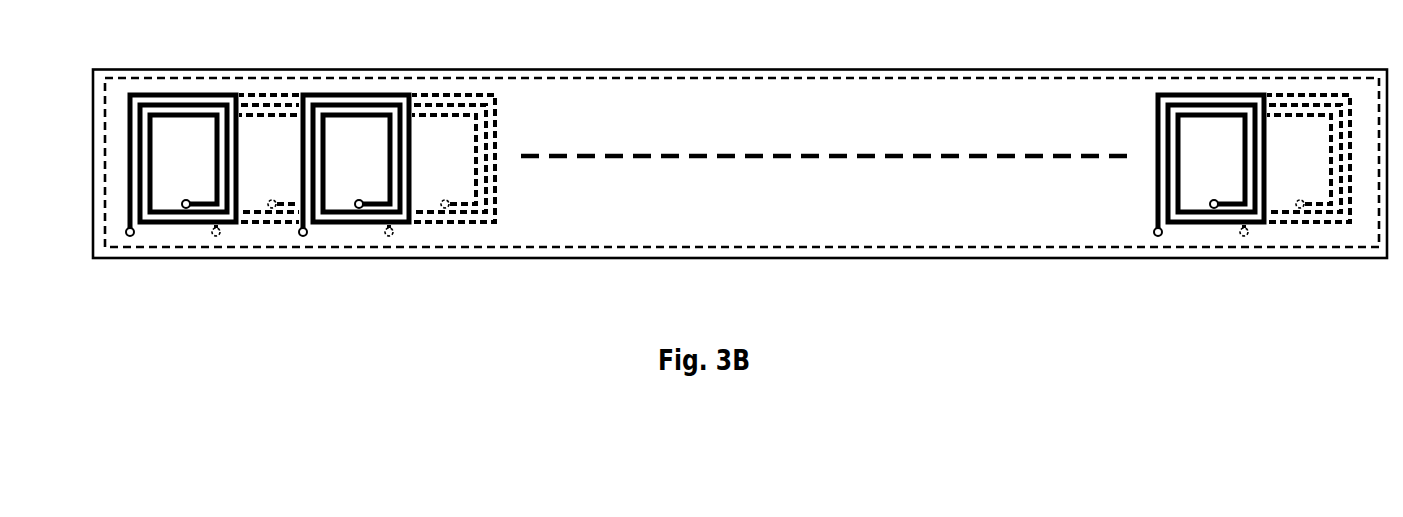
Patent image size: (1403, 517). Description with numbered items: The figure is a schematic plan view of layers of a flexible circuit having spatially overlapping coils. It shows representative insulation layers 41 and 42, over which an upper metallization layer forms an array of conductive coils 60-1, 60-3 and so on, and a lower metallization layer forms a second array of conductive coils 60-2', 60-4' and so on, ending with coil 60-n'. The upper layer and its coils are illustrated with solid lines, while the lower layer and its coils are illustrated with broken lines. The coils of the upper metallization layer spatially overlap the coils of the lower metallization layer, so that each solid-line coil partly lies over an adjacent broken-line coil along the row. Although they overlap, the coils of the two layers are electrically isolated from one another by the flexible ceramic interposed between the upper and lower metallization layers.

The insulation layer 41 is at (1002, 70).
The insulation layer 42 is at (921, 79).
The conductive coil 60-1 is at (185, 101).
The conductive coil 60-2' is at (267, 135).
The conductive coil 60-3 is at (360, 101).
The conductive coil 60-4' is at (440, 135).
The conductive coil 60-n' is at (1295, 135).